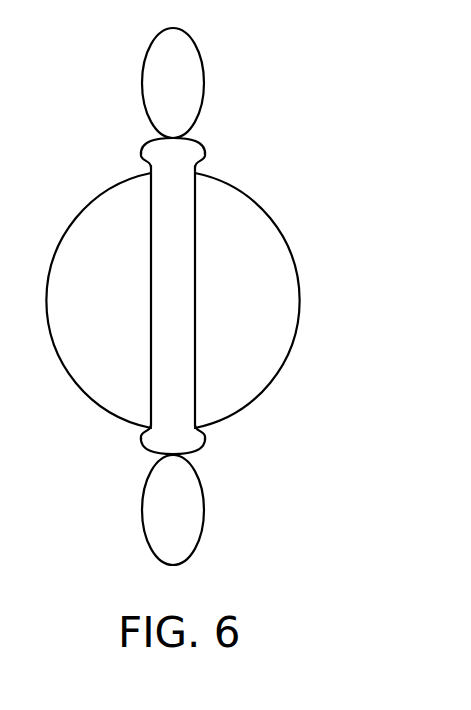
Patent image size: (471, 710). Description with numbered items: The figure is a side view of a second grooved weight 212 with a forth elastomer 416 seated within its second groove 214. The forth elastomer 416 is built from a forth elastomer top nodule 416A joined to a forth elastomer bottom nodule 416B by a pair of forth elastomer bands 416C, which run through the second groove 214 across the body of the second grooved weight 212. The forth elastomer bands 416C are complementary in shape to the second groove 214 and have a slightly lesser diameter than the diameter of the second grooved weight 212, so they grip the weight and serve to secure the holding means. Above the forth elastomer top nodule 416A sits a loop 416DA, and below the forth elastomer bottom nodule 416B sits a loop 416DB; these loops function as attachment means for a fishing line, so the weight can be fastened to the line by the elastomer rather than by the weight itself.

The second grooved weight 212 is at (287, 231).
The second groove 214 is at (195, 376).
The forth elastomer 416 is at (204, 143).
The forth elastomer top nodule 416A is at (206, 157).
The forth elastomer bottom nodule 416B is at (206, 446).
The forth elastomer bands 416C is at (176, 310).
The upper lobe 416DA is at (203, 55).
The lower lobe 416DB is at (203, 535).